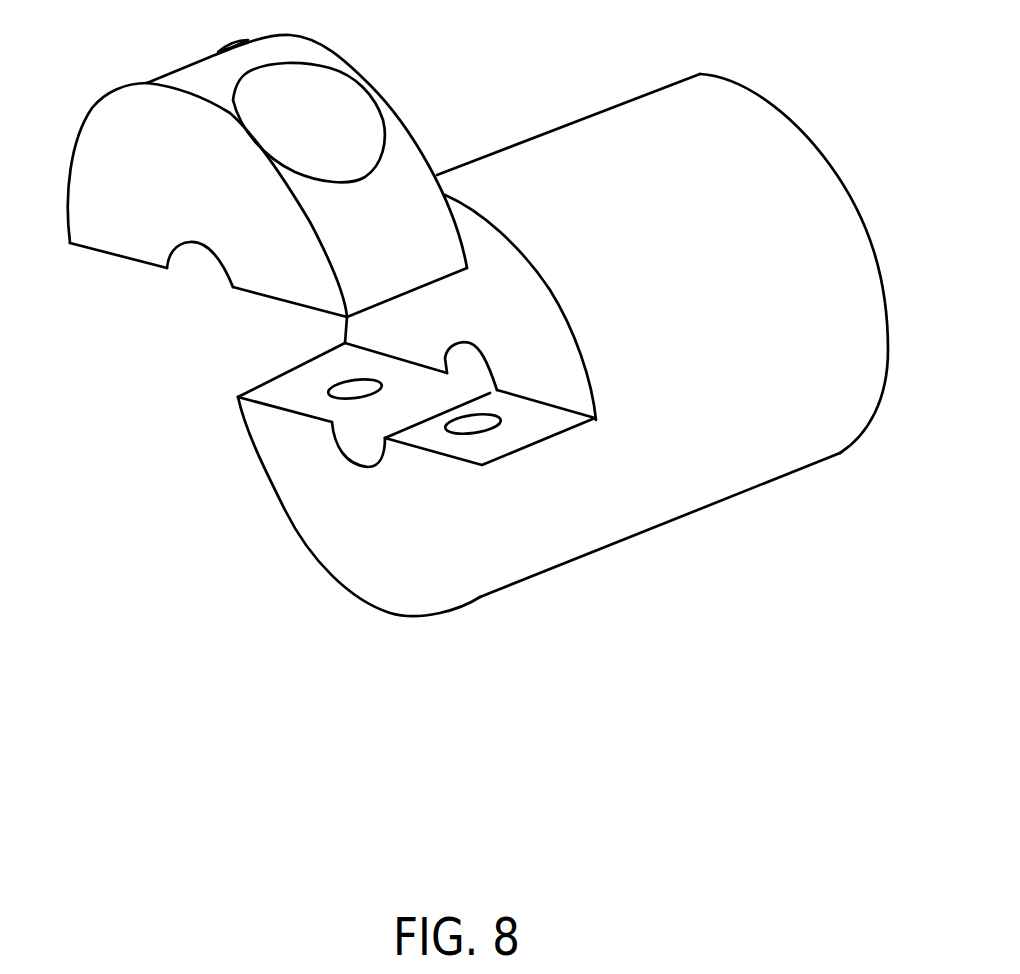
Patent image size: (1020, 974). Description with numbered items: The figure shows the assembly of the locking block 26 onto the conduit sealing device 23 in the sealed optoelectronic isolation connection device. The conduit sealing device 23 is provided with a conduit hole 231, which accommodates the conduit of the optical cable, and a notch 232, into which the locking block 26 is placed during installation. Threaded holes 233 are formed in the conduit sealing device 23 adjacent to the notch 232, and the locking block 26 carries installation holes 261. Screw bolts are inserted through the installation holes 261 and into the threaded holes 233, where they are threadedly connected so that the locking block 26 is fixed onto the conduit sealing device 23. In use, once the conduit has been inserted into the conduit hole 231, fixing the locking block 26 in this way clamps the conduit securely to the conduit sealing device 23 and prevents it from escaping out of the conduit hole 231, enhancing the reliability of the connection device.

The conduit sealing device 23 is at (748, 412).
The conduit hole 231 is at (483, 355).
The notch 232 is at (303, 383).
The threaded holes 233 is at (352, 385).
The locking block 26 is at (138, 180).
The installation holes 261 is at (323, 118).